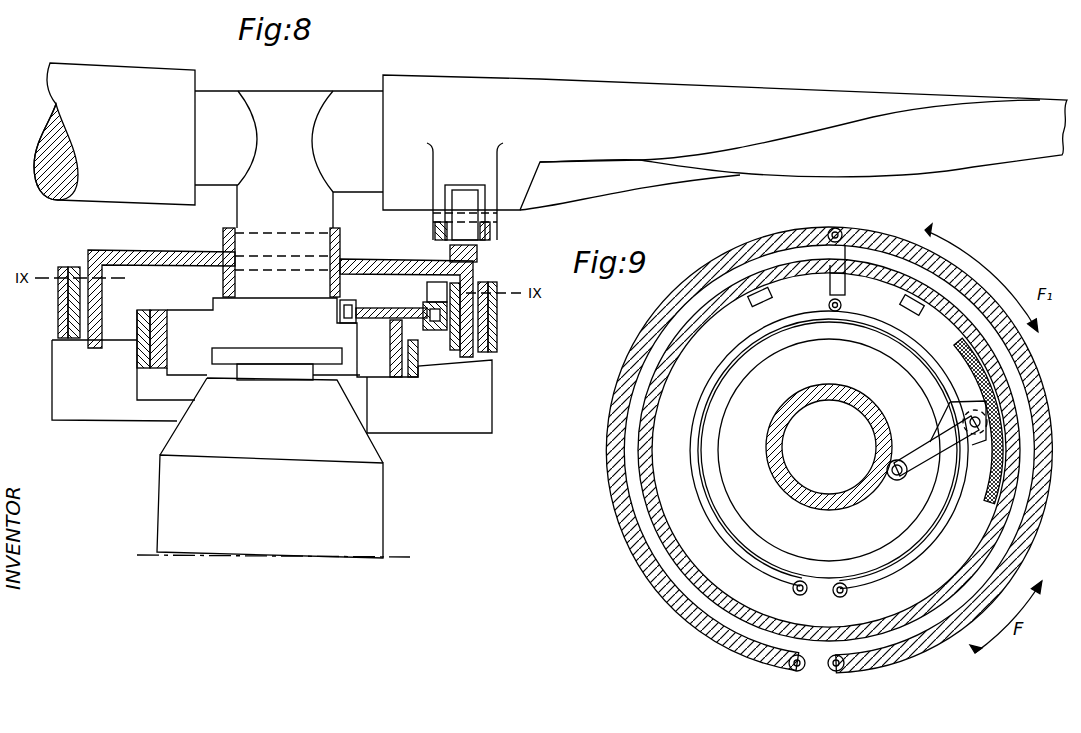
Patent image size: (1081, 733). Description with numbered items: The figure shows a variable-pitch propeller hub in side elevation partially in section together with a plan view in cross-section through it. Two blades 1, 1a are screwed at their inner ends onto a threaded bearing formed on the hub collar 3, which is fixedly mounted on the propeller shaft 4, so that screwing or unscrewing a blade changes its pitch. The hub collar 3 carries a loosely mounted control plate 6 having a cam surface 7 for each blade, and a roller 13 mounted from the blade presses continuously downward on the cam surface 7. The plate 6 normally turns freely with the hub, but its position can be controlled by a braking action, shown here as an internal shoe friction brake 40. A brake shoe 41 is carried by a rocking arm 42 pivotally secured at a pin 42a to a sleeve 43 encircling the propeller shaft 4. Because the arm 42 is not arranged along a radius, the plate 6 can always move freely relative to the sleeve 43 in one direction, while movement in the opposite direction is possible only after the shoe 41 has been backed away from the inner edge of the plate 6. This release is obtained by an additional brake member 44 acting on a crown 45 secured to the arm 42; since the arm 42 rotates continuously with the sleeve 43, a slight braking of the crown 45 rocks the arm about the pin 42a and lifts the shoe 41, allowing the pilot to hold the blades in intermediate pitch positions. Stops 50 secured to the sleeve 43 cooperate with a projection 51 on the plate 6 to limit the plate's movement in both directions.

In FIG. 8, the propeller blade 1 is at (197, 73).
In FIG. 8, the propeller blade 1a is at (407, 80).
In FIG. 8, the hub collar 3 is at (297, 103).
In FIG. 8, the propeller shaft 4 is at (242, 282).
In FIG. 9, the propeller shaft 4 is at (790, 455).
In FIG. 8, the control plate 6 is at (474, 271).
In FIG. 9, the control plate 6 is at (987, 353).
In FIG. 8, the cam surface 7 is at (478, 253).
In FIG. 8, the roller 13 is at (473, 228).
In FIG. 8, the internal shoe friction brake 40 is at (499, 322).
In FIG. 9, the internal shoe friction brake 40 is at (993, 317).
In FIG. 8, the brake shoe 41 is at (440, 292).
In FIG. 9, the brake shoe 41 is at (960, 403).
In FIG. 8, the rocking arm 42 is at (368, 318).
In FIG. 9, the rocking arm 42 is at (927, 455).
In FIG. 9, the pin 42a is at (897, 480).
In FIG. 8, the sleeve 43 is at (240, 333).
In FIG. 9, the sleeve 43 is at (775, 490).
In FIG. 8, the additional brake member 44 is at (420, 367).
In FIG. 8, the crown 45 is at (380, 363).
In FIG. 9, the crown 45 is at (767, 547).
In FIG. 9, the stops 50 is at (925, 320).
In FIG. 9, the projection 51 is at (840, 275).